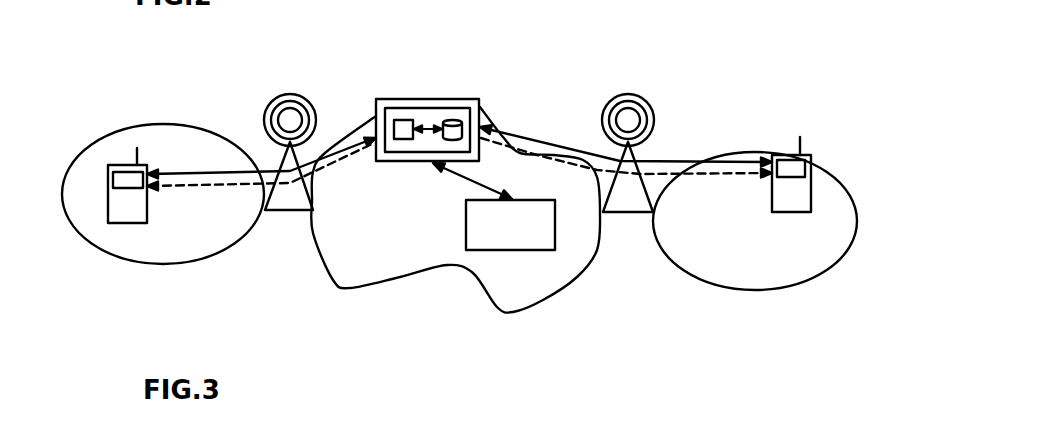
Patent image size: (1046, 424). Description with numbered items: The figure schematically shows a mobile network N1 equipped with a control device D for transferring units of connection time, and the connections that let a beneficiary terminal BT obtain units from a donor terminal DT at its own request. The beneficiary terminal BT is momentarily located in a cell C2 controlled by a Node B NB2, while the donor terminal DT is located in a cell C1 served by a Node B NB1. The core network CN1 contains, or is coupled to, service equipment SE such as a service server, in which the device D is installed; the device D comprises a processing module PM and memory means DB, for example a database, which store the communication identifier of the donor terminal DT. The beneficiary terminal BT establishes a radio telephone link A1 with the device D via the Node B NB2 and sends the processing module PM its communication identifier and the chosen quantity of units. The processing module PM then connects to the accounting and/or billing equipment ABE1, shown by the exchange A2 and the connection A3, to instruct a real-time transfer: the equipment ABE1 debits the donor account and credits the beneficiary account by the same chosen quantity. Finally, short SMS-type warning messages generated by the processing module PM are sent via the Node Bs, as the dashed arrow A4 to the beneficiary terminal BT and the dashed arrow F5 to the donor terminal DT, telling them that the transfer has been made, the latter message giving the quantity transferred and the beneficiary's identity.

The cell C2 is at (97, 143).
The beneficiary terminal BT is at (110, 210).
The radio telephone link A1 is at (199, 172).
The warning message to beneficiary terminal A4 is at (209, 187).
The Node B NB2 is at (288, 96).
The Node B NB1 is at (643, 103).
The core network CN1 is at (348, 291).
The service equipment SE is at (398, 108).
The control device D is at (402, 152).
The processing module PM is at (402, 120).
The memory means DB is at (450, 118).
The connection to accounting equipment A3 is at (557, 143).
The warning message to donor terminal F5 is at (708, 175).
The connection to accounting equipment A2 is at (463, 180).
The accounting and/or billing equipment ABE1 is at (527, 250).
The cell C1 is at (783, 290).
The donor terminal DT is at (810, 167).
The mobile network N1 is at (788, 70).